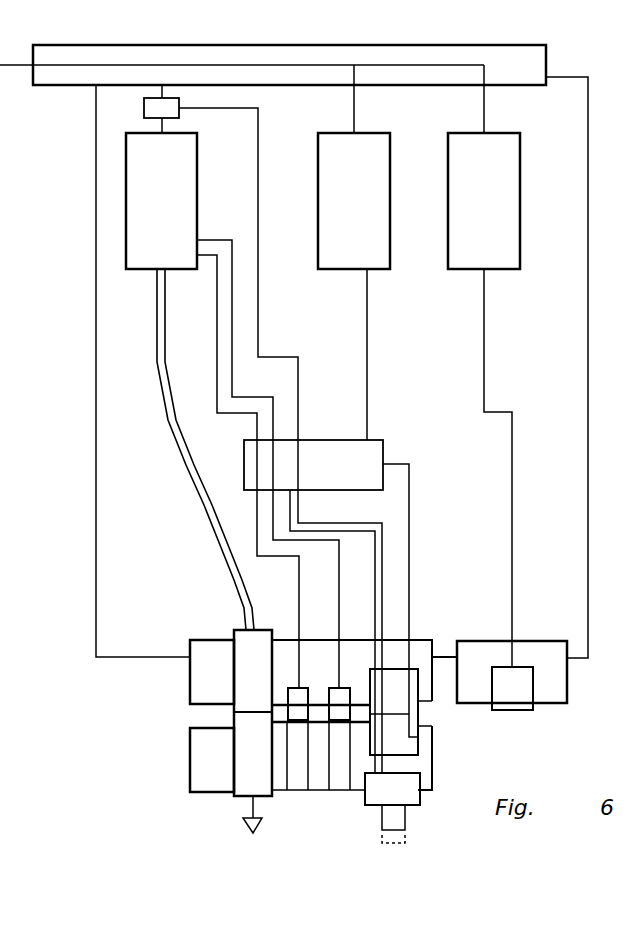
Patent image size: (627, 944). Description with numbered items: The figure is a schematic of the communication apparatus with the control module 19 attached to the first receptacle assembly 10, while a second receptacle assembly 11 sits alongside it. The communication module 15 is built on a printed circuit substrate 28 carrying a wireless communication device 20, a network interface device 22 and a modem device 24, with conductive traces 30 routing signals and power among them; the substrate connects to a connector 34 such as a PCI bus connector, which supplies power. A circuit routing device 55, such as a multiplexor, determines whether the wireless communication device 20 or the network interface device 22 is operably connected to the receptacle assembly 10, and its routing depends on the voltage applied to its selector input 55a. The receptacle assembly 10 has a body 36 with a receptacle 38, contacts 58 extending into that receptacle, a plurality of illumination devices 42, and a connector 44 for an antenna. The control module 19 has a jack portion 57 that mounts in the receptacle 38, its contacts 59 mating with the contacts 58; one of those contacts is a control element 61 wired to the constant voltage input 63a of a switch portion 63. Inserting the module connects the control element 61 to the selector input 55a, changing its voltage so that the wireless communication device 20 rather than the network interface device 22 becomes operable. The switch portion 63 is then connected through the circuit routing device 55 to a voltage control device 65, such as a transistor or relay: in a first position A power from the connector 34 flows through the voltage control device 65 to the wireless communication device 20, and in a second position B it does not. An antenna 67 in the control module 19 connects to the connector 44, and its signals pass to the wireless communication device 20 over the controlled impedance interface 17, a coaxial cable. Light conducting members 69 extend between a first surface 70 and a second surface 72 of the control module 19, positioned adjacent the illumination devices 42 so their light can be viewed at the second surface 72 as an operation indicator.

The connector 34 is at (547, 53).
The voltage control device 65 is at (144, 106).
The wireless communication device 20 is at (126, 183).
The network interface device 22 is at (391, 150).
The modem device 24 is at (521, 155).
The conductive traces 30 is at (259, 126).
The printed circuit substrate 28 is at (107, 537).
The communication module 15 is at (92, 338).
The controlled impedance interface 17 is at (160, 396).
The circuit routing device 55 is at (373, 440).
The selector input 55a is at (395, 463).
The contacts 58 is at (382, 692).
The receptacle 38 is at (445, 657).
The connector 44 is at (240, 653).
The body 36 is at (197, 693).
The first receptacle assembly 10 is at (182, 673).
The control module 19 is at (182, 765).
The first surface 70 is at (203, 723).
The second surface 72 is at (202, 792).
The antenna 67 is at (243, 827).
The light conducting members 69 is at (317, 780).
The illumination devices 42 is at (283, 689).
The contacts 59 is at (418, 718).
The control element 61 is at (413, 738).
The jack portion 57 is at (428, 711).
The switch portion 63 is at (421, 797).
The constant voltage input 63a is at (363, 776).
The first position A is at (412, 818).
The second position B is at (404, 848).
The second receptacle assembly 11 is at (556, 711).